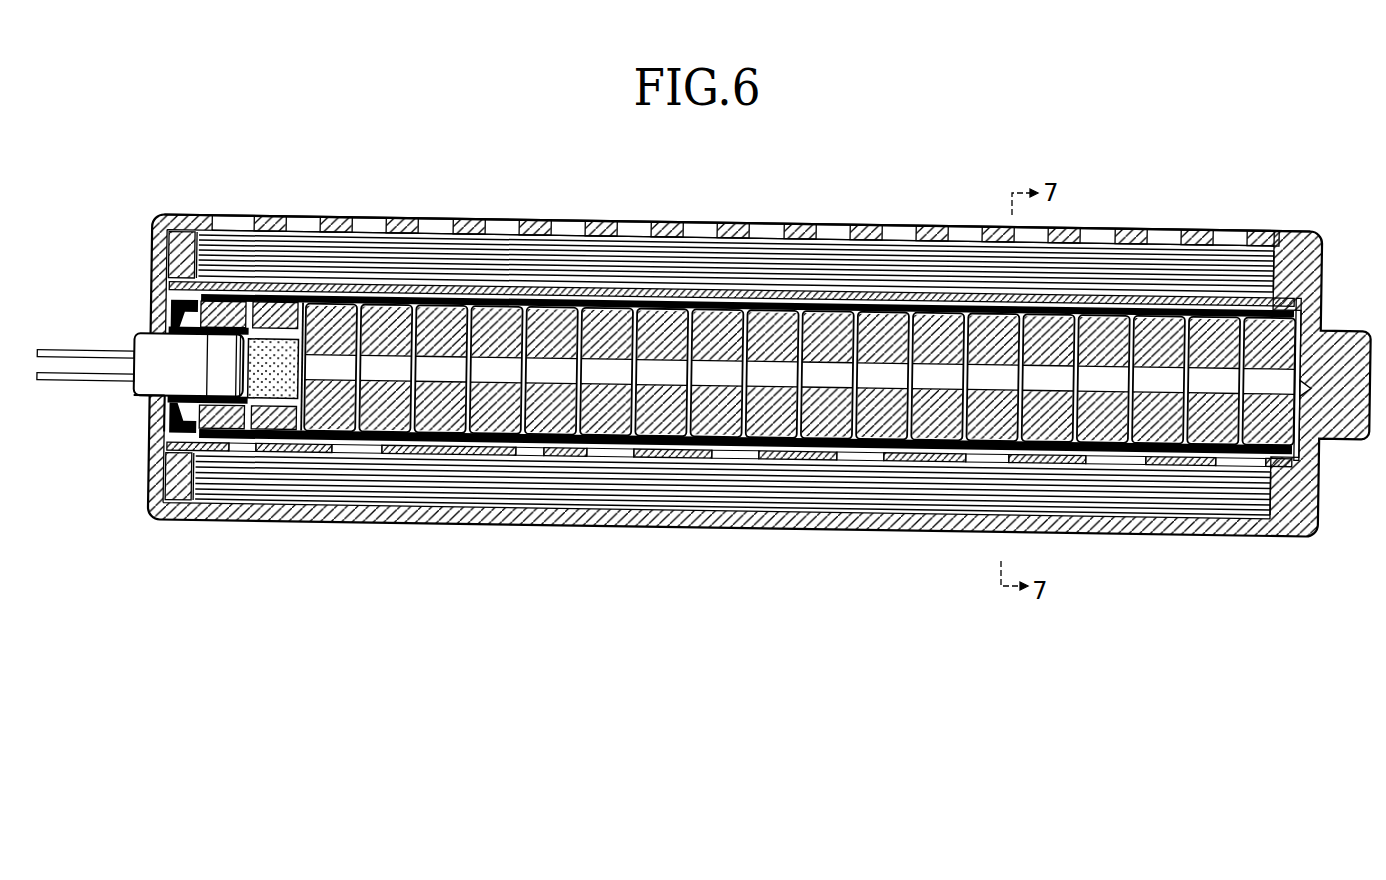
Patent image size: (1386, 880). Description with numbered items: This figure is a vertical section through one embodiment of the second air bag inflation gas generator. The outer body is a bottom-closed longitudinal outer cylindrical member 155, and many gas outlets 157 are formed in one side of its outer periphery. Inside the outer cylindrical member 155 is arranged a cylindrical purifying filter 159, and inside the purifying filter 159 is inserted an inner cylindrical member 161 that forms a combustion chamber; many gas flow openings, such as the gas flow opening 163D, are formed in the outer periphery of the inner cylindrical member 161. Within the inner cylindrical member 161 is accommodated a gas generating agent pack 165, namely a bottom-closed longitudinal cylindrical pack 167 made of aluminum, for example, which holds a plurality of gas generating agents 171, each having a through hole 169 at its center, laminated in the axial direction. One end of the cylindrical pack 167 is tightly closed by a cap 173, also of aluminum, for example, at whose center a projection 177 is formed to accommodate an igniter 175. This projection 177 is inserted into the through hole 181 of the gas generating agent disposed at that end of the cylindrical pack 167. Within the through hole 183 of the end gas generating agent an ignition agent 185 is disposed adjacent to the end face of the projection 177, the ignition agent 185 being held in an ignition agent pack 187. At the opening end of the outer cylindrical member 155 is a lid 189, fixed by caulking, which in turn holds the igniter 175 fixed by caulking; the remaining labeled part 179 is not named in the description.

The lid 189 is at (153, 277).
The outer cylindrical member 155 is at (340, 217).
The gas outlets 157 is at (697, 222).
The purifying filter 159 is at (495, 263).
The projection 177 is at (210, 473).
The inner cylindrical member 161 is at (235, 290).
The through hole 181 is at (216, 456).
The ignition agent 185 is at (250, 449).
The gas generating agent pack 165 is at (751, 454).
The gas flow opening 163D is at (976, 457).
The cylindrical pack 167 is at (370, 449).
The through hole 169 is at (448, 378).
The gas generating agents 171 is at (509, 421).
The through hole 183 is at (264, 445).
The ignition agent pack 187 is at (284, 298).
The cap 173 is at (153, 413).
The seal 179 is at (163, 317).
The igniter 175 is at (160, 433).